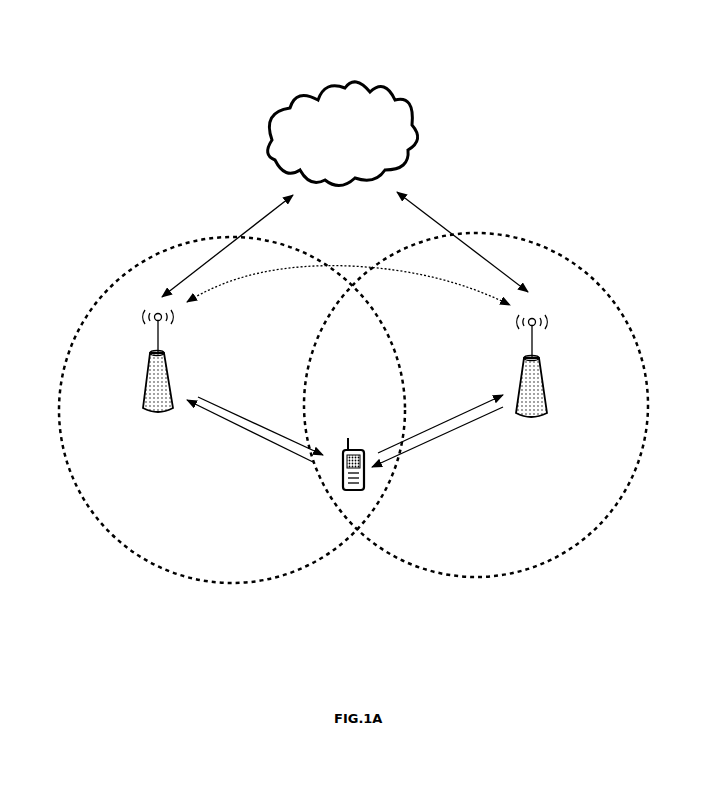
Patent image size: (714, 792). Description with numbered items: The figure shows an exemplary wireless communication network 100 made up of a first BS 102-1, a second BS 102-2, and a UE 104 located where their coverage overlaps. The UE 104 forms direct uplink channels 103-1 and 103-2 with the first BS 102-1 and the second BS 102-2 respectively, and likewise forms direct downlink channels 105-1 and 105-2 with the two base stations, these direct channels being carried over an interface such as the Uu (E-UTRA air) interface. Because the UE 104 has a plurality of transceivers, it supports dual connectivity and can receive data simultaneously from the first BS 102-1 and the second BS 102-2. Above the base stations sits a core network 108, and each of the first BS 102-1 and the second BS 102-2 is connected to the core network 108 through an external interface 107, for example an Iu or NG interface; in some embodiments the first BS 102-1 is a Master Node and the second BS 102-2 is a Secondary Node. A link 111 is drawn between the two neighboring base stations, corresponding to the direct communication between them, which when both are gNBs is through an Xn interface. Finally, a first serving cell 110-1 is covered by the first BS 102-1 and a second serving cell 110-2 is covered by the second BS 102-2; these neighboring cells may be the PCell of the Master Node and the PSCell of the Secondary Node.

The wireless communication network 100 is at (100, 97).
The core network 108 is at (292, 122).
The external interface 107 is at (240, 232).
The inter-base-station link 111 is at (363, 267).
The first base station 102-1 is at (177, 348).
The second base station 102-2 is at (543, 350).
The user equipment 104 is at (348, 440).
The downlink channel 105-1 is at (235, 415).
The uplink channel 103-1 is at (262, 436).
The downlink channel 105-2 is at (475, 408).
The uplink channel 103-2 is at (428, 440).
The first serving cell 110-1 is at (175, 578).
The second serving cell 110-2 is at (450, 577).